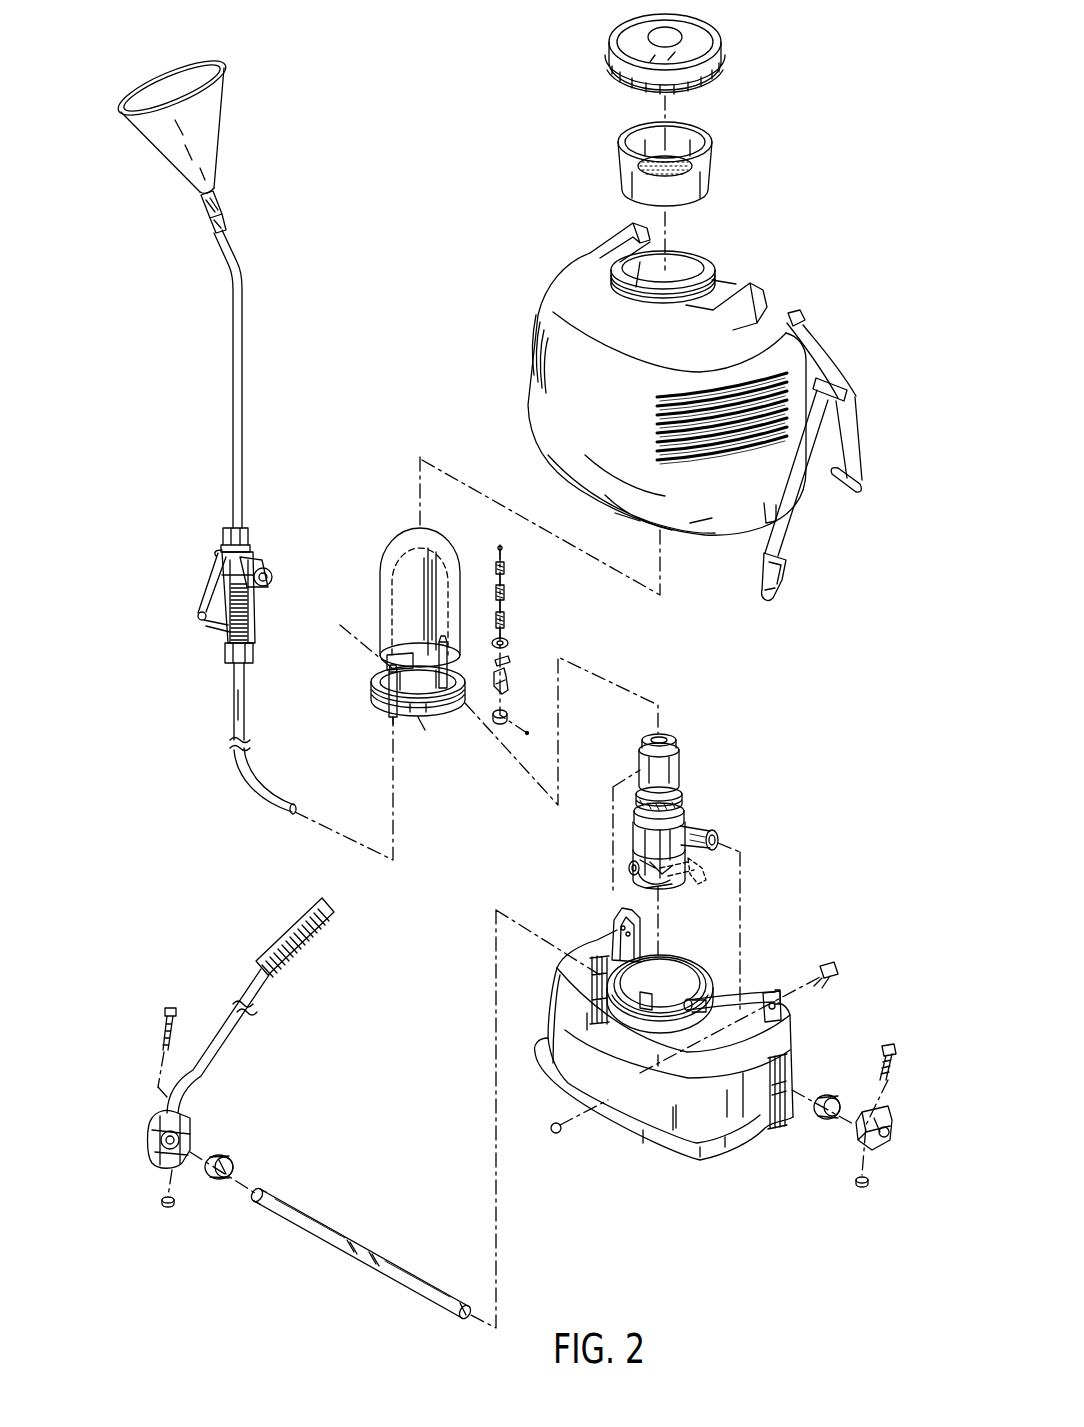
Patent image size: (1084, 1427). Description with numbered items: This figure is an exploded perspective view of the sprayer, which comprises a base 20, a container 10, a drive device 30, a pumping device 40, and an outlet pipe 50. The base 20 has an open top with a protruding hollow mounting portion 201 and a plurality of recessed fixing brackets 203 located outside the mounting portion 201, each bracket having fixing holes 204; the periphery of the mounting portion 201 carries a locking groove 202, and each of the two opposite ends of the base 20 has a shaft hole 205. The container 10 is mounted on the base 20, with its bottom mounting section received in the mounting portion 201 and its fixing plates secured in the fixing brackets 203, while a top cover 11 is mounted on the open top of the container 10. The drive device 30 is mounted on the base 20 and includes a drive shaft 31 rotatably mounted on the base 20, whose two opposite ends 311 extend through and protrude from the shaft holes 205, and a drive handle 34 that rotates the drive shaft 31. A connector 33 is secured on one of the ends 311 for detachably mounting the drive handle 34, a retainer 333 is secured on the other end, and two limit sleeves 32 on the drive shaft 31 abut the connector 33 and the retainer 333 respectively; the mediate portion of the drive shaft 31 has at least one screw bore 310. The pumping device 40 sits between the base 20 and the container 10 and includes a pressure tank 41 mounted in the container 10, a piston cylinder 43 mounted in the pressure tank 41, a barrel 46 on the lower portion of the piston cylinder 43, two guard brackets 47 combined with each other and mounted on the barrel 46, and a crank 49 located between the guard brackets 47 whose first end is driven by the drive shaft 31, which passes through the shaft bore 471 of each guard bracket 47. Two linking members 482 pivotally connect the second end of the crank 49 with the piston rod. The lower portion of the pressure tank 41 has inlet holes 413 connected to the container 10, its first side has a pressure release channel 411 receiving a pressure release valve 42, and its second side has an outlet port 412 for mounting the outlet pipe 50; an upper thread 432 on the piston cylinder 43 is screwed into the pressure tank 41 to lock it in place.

The container 10 is at (528, 294).
The top cover 11 is at (696, 44).
The base 20 is at (695, 1090).
The mounting portion 201 is at (640, 962).
The locking groove 202 is at (626, 1005).
The fixing brackets 203 is at (778, 992).
The fixing holes 204 is at (738, 998).
The shaft hole 205 is at (785, 1085).
The drive device 30 is at (286, 1098).
The drive shaft 31 is at (361, 1228).
The screw bore 310 is at (372, 1255).
The opposite ends 311 is at (265, 1190).
The limit sleeves 32 is at (820, 1122).
The connector 33 is at (148, 1148).
The retainer 333 is at (878, 1130).
The drive handle 34 is at (222, 1027).
The pumping device 40 is at (477, 669).
The pressure tank 41 is at (405, 555).
The pressure release channel 411 is at (445, 556).
The outlet port 412 is at (392, 716).
The inlet holes 413 is at (373, 657).
The pressure release valve 42 is at (516, 588).
The piston cylinder 43 is at (696, 844).
The upper thread 432 is at (682, 790).
The barrel 46 is at (637, 830).
The guard brackets 47 is at (637, 853).
The shaft bore 471 is at (718, 845).
The linking members 482 is at (660, 882).
The crank 49 is at (697, 860).
The outlet pipe 50 is at (186, 415).